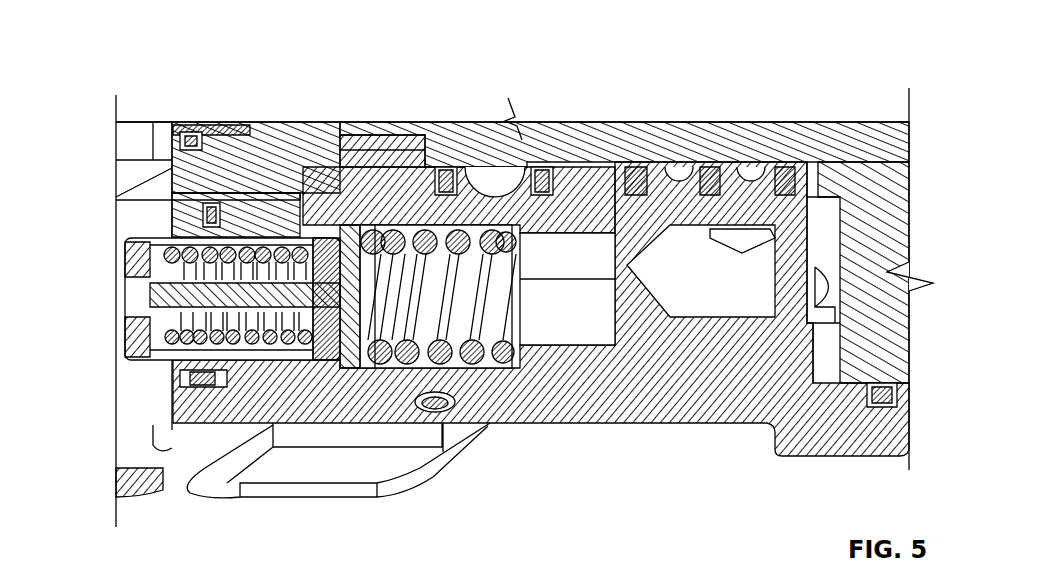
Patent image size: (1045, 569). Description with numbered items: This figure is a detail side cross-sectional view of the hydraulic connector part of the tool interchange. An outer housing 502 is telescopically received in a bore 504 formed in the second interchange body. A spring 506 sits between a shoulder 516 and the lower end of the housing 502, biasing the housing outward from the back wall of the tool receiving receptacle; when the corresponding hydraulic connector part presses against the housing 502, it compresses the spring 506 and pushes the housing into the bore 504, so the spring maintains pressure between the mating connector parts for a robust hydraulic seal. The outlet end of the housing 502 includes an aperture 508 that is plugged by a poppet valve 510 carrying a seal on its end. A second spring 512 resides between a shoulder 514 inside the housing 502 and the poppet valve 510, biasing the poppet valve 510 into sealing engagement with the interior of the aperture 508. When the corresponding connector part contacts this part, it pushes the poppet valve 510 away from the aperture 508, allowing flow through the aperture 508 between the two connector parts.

The outer housing 502 is at (218, 228).
The bore 504 is at (435, 185).
The spring 506 is at (502, 280).
The aperture 508 is at (150, 262).
The poppet valve 510 is at (112, 311).
The second spring 512 is at (205, 365).
The shoulder 514 is at (215, 227).
The shoulder 516 is at (545, 185).